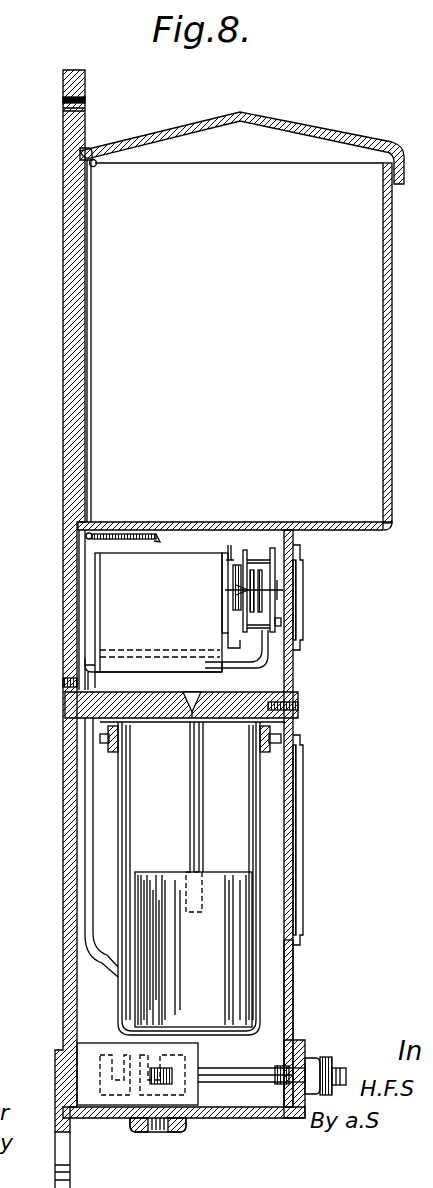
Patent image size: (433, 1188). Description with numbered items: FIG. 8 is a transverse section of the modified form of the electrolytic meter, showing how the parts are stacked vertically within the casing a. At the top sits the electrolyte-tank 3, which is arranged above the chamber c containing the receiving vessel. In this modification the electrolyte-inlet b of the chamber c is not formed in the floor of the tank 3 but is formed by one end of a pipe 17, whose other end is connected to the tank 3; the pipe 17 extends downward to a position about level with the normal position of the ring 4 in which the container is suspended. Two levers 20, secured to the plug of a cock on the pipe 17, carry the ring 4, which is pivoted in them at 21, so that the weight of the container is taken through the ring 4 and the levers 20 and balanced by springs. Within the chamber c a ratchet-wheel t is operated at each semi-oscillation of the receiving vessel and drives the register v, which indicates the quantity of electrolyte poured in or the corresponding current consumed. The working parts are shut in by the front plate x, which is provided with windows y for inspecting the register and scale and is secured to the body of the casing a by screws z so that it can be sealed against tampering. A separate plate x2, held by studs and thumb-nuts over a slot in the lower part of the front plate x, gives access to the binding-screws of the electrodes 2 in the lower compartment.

The casing a is at (75, 617).
The electrolyte-tank 3 is at (236, 335).
The inlet b is at (172, 524).
The pipe 17 is at (112, 530).
The chamber c is at (153, 610).
The ratchet-wheel t is at (232, 590).
The register v is at (275, 565).
The windows y is at (295, 612).
The screws z is at (300, 707).
The ring 4 is at (120, 752).
The pivot 21 is at (108, 738).
The levers 20 is at (104, 745).
The electrodes 2 is at (162, 870).
The front plate x is at (294, 978).
The plate x2 is at (300, 1042).